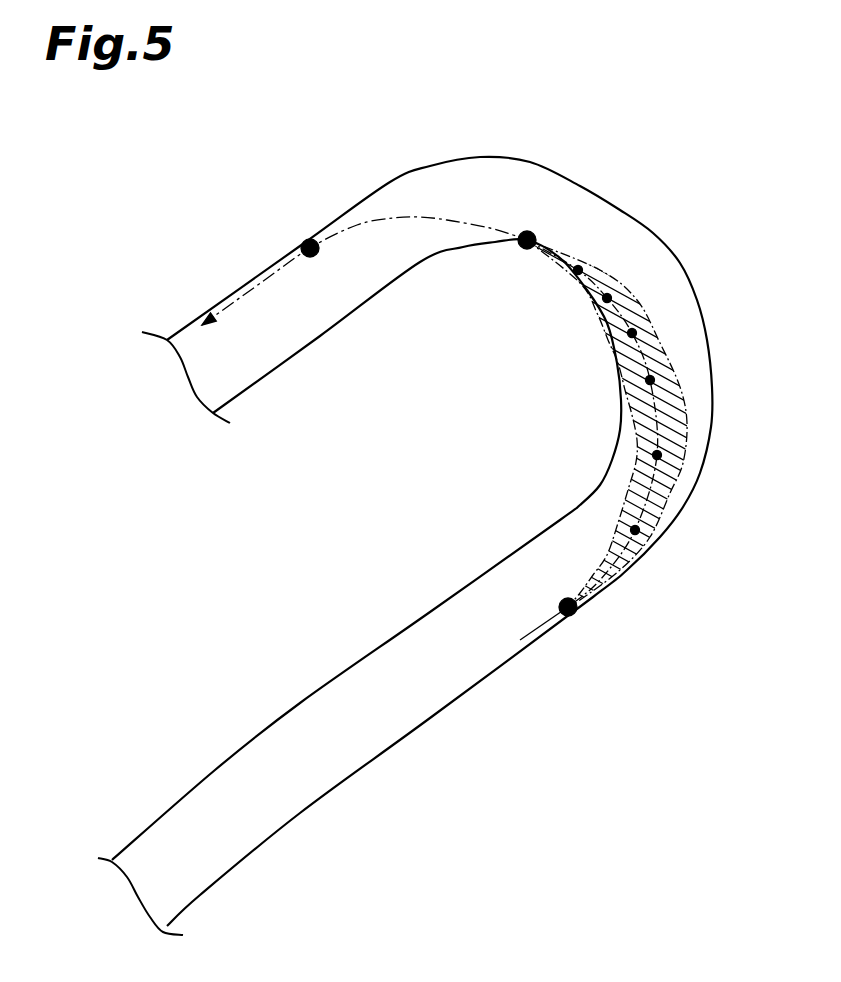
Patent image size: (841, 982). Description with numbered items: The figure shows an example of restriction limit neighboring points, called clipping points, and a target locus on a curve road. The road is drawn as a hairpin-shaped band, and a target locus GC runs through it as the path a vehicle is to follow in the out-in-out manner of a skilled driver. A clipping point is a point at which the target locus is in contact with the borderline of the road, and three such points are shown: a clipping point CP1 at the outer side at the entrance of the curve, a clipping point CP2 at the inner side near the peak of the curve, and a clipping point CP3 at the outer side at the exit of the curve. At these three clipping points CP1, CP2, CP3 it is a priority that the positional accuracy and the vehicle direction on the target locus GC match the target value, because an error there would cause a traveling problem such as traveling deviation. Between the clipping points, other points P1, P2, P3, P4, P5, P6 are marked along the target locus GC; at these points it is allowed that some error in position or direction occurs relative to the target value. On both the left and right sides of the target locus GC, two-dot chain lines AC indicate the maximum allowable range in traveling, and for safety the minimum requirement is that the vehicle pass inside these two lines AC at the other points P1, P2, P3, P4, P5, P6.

The target locus GC is at (395, 217).
The two-dot chain line AC is at (607, 550).
The clipping point CP1 is at (568, 617).
The clipping point CP2 is at (527, 232).
The clipping point CP3 is at (310, 240).
The point on target locus P1 is at (633, 528).
The point on target locus P2 is at (653, 455).
The point on target locus P3 is at (648, 382).
The point on target locus P4 is at (630, 335).
The point on target locus P5 is at (605, 300).
The point on target locus P6 is at (575, 272).